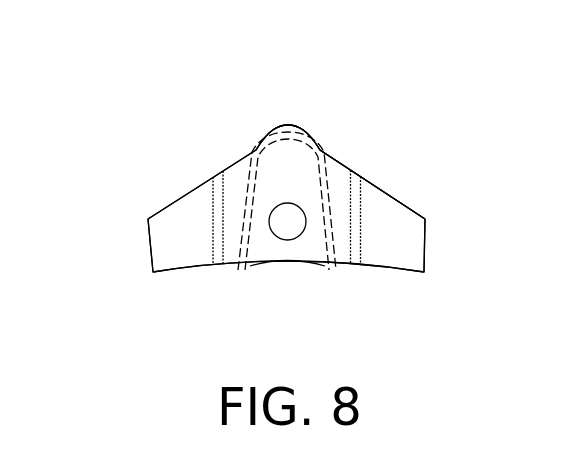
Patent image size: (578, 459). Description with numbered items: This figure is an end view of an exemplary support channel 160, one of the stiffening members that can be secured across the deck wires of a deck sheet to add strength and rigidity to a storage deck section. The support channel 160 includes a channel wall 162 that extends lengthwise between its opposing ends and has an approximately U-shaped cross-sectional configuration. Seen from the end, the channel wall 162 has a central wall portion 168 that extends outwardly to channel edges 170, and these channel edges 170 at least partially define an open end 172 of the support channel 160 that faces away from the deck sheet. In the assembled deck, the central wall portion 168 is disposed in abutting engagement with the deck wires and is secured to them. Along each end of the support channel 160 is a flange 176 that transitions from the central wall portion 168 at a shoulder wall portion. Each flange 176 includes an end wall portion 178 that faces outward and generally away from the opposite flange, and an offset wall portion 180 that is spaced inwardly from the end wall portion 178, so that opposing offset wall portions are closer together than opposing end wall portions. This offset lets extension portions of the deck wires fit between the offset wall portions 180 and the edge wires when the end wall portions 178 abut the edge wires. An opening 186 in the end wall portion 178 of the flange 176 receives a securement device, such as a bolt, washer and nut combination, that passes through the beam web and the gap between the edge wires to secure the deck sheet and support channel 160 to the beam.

The support channel 160 is at (202, 113).
The channel wall 162 is at (335, 140).
The central wall portion 168 is at (288, 125).
The channel edges 170 is at (240, 267).
The open end 172 is at (276, 265).
The flange 176 is at (460, 193).
The end wall portion 178 is at (340, 170).
The offset wall portion 180 is at (178, 217).
The opening 186 is at (293, 242).